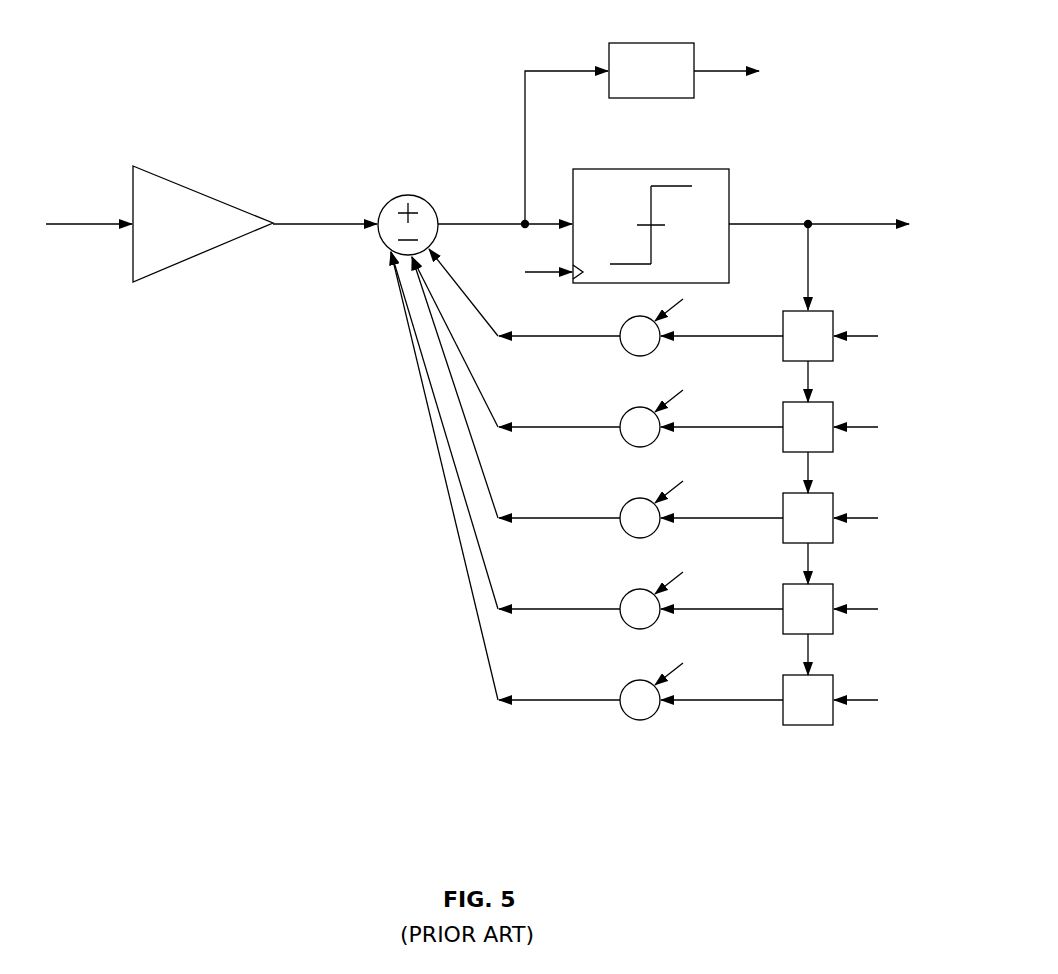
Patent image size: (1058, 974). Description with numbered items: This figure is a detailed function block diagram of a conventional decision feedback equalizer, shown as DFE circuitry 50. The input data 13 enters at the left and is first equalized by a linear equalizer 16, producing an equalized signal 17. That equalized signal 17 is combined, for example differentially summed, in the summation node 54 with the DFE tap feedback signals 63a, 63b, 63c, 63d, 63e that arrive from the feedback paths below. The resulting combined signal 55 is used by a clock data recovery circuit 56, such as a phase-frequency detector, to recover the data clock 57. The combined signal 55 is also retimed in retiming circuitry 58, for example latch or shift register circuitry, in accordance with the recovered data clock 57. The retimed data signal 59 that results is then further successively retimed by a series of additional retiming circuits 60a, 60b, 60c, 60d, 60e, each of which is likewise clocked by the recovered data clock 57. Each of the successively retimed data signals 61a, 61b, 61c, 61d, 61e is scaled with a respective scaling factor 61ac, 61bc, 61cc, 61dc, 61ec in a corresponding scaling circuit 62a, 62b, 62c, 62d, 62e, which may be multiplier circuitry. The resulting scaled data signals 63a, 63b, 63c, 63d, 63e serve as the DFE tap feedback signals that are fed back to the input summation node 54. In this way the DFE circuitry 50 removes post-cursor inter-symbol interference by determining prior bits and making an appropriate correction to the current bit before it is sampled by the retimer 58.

The input data 13 is at (90, 227).
The linear equalizer 16 is at (204, 254).
The equalized signal 17 is at (290, 222).
The DFE circuitry 50 is at (374, 578).
The summation node 54 is at (383, 245).
The combined signal 55 is at (494, 222).
The clock data recovery circuit 56 is at (694, 89).
The recovered data clock 57 is at (706, 69).
The retiming circuitry 58 is at (729, 175).
The retimed data signal 59 is at (783, 222).
The additional retiming circuit 60a is at (784, 312).
The additional retiming circuit 60b is at (782, 408).
The additional retiming circuit 60c is at (782, 499).
The additional retiming circuit 60d is at (782, 590).
The additional retiming circuit 60e is at (782, 681).
The successively retimed data signal 61a is at (808, 366).
The successively retimed data signal 61b is at (808, 457).
The successively retimed data signal 61c is at (808, 548).
The successively retimed data signal 61d is at (808, 639).
The successively retimed data signal 61e is at (717, 702).
The scaling factor 61ac is at (677, 308).
The scaling factor 61bc is at (677, 399).
The scaling factor 61cc is at (677, 490).
The scaling factor 61dc is at (677, 581).
The scaling factor 61ec is at (677, 672).
The scaling circuit 62a is at (625, 347).
The scaling circuit 62b is at (625, 438).
The scaling circuit 62c is at (625, 529).
The scaling circuit 62d is at (625, 620).
The scaling circuit 62e is at (625, 711).
The scaled data signal 63a is at (530, 336).
The scaled data signal 63b is at (530, 427).
The scaled data signal 63c is at (530, 518).
The scaled data signal 63d is at (530, 609).
The scaled data signal 63e is at (530, 700).